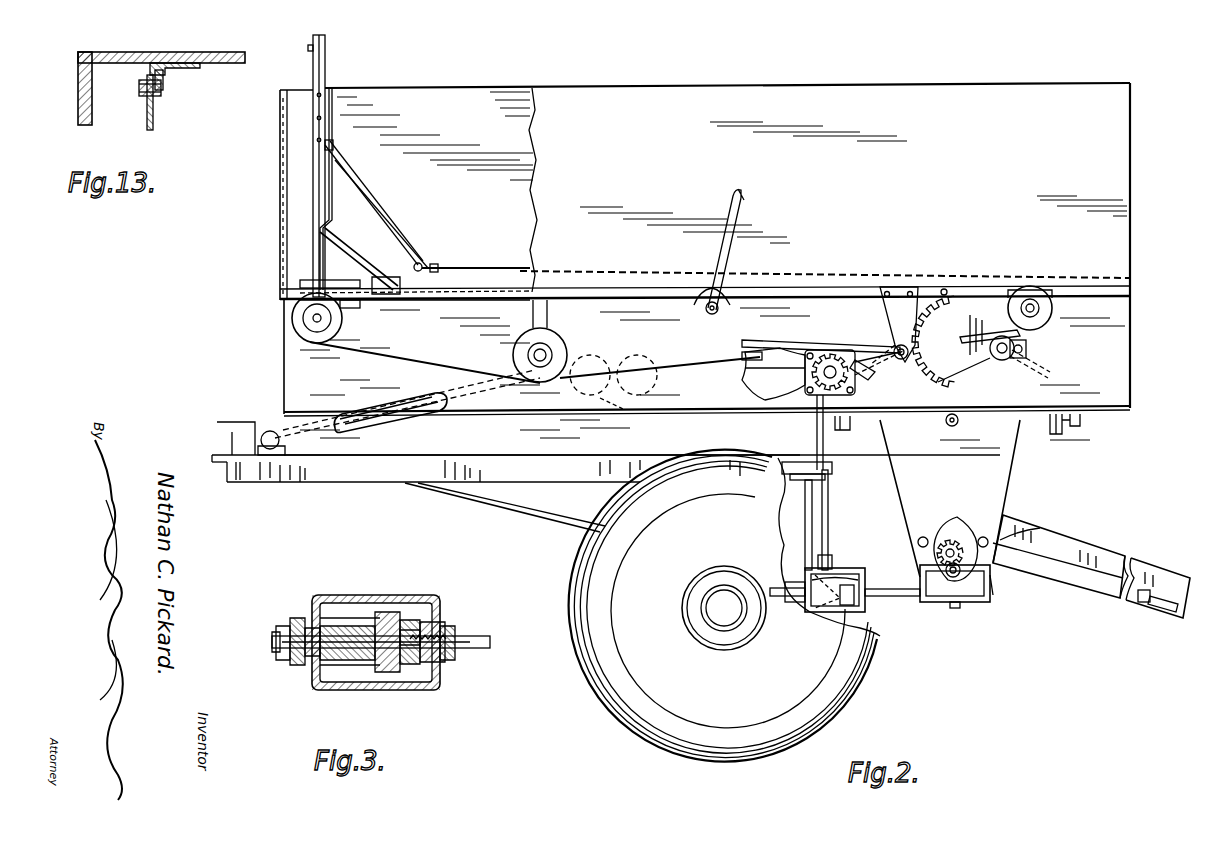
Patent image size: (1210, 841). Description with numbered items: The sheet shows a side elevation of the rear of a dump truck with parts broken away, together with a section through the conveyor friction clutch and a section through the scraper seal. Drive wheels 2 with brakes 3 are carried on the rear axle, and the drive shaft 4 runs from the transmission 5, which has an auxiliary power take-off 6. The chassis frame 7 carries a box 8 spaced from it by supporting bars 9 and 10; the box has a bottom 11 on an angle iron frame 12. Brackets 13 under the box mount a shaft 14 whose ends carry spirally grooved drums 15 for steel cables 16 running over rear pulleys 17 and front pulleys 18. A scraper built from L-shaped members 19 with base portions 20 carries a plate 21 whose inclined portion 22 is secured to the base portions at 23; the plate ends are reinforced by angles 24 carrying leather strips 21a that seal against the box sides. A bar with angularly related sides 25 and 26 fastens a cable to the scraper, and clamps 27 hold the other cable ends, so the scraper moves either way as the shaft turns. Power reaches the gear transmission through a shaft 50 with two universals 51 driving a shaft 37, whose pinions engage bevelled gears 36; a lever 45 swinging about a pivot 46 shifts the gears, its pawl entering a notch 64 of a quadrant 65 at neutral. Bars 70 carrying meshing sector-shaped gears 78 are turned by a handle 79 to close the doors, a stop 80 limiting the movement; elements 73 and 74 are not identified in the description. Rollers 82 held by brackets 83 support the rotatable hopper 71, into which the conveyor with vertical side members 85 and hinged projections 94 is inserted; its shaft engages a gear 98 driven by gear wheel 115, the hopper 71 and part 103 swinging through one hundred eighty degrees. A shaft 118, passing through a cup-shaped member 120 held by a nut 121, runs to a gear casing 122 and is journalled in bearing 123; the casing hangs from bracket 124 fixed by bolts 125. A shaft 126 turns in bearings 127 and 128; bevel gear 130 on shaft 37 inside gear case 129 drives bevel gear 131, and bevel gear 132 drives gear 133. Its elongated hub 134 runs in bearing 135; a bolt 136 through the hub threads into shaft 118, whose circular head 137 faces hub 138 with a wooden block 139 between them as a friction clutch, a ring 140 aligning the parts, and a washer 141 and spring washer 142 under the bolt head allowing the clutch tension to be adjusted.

In FIG. 2, the drive wheels 2 is at (585, 568).
In FIG. 2, the brakes 3 is at (800, 592).
In FIG. 2, the drive shaft 4 is at (500, 505).
In FIG. 2, the transmission 5 is at (226, 426).
In FIG. 2, the auxiliary power take-off 6 is at (268, 430).
In FIG. 2, the chassis frame 7 is at (372, 484).
In FIG. 13, the box 8 is at (78, 102).
In FIG. 2, the box 8 is at (280, 186).
In FIG. 2, the supporting bar 9 is at (707, 432).
In FIG. 2, the supporting bar 10 is at (310, 356).
In FIG. 2, the bottom 11 is at (485, 300).
In FIG. 2, the angle iron frame 12 is at (405, 302).
In FIG. 2, the brackets 13 is at (280, 114).
In FIG. 2, the shaft 14 is at (555, 366).
In FIG. 2, the drums 15 is at (513, 352).
In FIG. 2, the steel cables 16 is at (478, 282).
In FIG. 2, the pulleys 17 is at (1050, 320).
In FIG. 2, the pulleys 18 is at (300, 323).
In FIG. 13, the L-shaped members 19 is at (139, 90).
In FIG. 2, the L-shaped members 19 is at (292, 200).
In FIG. 2, the base portions 20 is at (370, 302).
In FIG. 13, the plate 21 is at (147, 122).
In FIG. 2, the plate 21 is at (334, 186).
In FIG. 13, the leather strip 21a is at (180, 72).
In FIG. 2, the leather strip 21a is at (327, 142).
In FIG. 2, the inclined portion 22 is at (345, 262).
In FIG. 2, the securing point 23 is at (387, 271).
In FIG. 13, the angles 24 is at (160, 92).
In FIG. 2, the angles 24 is at (330, 162).
In FIG. 2, the side of bar 25 is at (378, 222).
In FIG. 2, the side of bar 26 is at (428, 264).
In FIG. 2, the clamps 27 is at (302, 284).
In FIG. 2, the bevelled gears 36 is at (612, 396).
In FIG. 2, the shaft 37 is at (762, 395).
In FIG. 2, the lever 45 is at (722, 247).
In FIG. 2, the pivot 46 is at (748, 335).
In FIG. 2, the shaft 50 is at (400, 415).
In FIG. 2, the universals 51 is at (270, 458).
In FIG. 2, the notch 64 is at (705, 300).
In FIG. 2, the quadrant 65 is at (722, 300).
In FIG. 2, the bars 70 is at (903, 360).
In FIG. 2, the hopper 71 is at (995, 492).
In FIG. 2, the block 73 is at (1028, 350).
In FIG. 2, the bracket 74 is at (893, 310).
In FIG. 2, the sector-shaped gear 78 is at (951, 350).
In FIG. 2, the handle 79 is at (765, 342).
In FIG. 2, the stop 80 is at (944, 289).
In FIG. 2, the rollers 82 is at (858, 426).
In FIG. 2, the brackets 83 is at (1072, 424).
In FIG. 2, the vertical side members 85 is at (1104, 560).
In FIG. 2, the hinged projections 94 is at (1008, 516).
In FIG. 2, the gear 98 is at (958, 538).
In FIG. 2, the part 103 is at (982, 600).
In FIG. 2, the gear wheel 115 is at (985, 582).
In FIG. 2, the shaft 118 is at (910, 596).
In FIG. 3, the shaft 118 is at (490, 638).
In FIG. 2, the cup-shaped cylindrical member 120 is at (970, 602).
In FIG. 2, the nut 121 is at (960, 608).
In FIG. 2, the gear casing 122 is at (844, 579).
In FIG. 3, the gear casing 122 is at (330, 598).
In FIG. 3, the bearing 123 is at (455, 650).
In FIG. 2, the bracket 124 is at (805, 520).
In FIG. 2, the bolts 125 is at (782, 470).
In FIG. 2, the shaft 126 is at (828, 512).
In FIG. 2, the bearing 127 is at (828, 562).
In FIG. 2, the bearing 128 is at (816, 392).
In FIG. 2, the gear case 129 is at (862, 365).
In FIG. 2, the bevel gear 130 is at (822, 358).
In FIG. 2, the bevel gear 131 is at (858, 378).
In FIG. 3, the bevel gear 131 is at (388, 615).
In FIG. 2, the bevel gear 132 is at (820, 588).
In FIG. 2, the gear 133 is at (830, 612).
In FIG. 3, the elongated hub 134 is at (345, 630).
In FIG. 3, the bearing 135 is at (318, 672).
In FIG. 3, the bolt 136 is at (360, 650).
In FIG. 3, the circular head 137 is at (448, 660).
In FIG. 3, the circular hub 138 is at (405, 670).
In FIG. 3, the circular wooden block 139 is at (438, 622).
In FIG. 3, the ring 140 is at (412, 618).
In FIG. 3, the washer 141 is at (295, 616).
In FIG. 3, the spring washer 142 is at (286, 660).